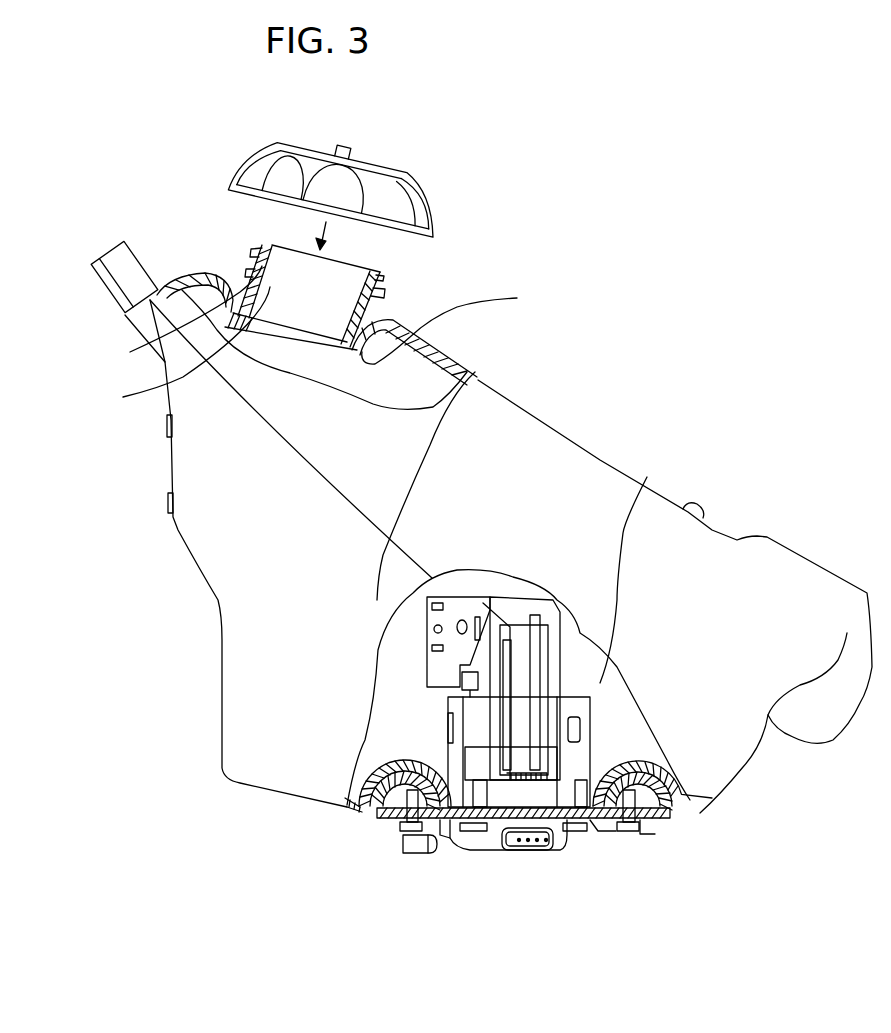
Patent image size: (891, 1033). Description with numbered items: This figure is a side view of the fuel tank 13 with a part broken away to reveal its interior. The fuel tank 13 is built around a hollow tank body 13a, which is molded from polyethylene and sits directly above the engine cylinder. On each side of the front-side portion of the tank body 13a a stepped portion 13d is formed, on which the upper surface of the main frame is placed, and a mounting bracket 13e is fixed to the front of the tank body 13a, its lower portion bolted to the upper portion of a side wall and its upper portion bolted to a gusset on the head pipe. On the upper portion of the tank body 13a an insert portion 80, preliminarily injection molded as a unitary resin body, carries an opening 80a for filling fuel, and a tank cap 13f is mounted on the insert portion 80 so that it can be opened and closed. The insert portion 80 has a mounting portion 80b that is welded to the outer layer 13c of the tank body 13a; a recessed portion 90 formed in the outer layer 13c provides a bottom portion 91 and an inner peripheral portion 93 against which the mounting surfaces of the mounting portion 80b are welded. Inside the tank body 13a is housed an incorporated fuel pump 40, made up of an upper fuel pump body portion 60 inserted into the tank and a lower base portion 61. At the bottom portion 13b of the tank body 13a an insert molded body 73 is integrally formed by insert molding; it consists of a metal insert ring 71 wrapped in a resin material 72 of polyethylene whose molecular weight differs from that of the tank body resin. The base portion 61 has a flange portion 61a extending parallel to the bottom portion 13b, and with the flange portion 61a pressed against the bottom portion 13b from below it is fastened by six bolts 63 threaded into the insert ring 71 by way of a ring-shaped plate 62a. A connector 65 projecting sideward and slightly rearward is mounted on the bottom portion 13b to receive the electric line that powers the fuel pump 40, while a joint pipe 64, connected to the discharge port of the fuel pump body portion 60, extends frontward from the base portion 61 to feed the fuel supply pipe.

The fuel tank 13 is at (579, 423).
The tank body 13a is at (263, 627).
The bottom portion 13b is at (387, 810).
The outer layer 13c is at (217, 273).
The stepped portion 13d is at (460, 377).
The mounting bracket 13e is at (107, 240).
The tank cap 13f is at (427, 203).
The fuel pump 40 is at (507, 588).
The fuel pump body portion 60 is at (638, 562).
The base portion 61 is at (483, 842).
The flange portion 61a is at (653, 820).
The ring-shaped plate 62a is at (387, 816).
The bolts 63 is at (403, 832).
The joint pipe 64 is at (410, 845).
The connector 65 is at (510, 850).
The insert ring 71 is at (387, 772).
The resin material 72 is at (375, 805).
The insert molded body 73 is at (478, 771).
The insert portion 80 is at (396, 294).
The opening 80a is at (380, 283).
The mounting portion 80b is at (386, 268).
The recessed portion 90 is at (156, 342).
The bottom portion 91 is at (88, 343).
The inner peripheral portion 93 is at (177, 322).